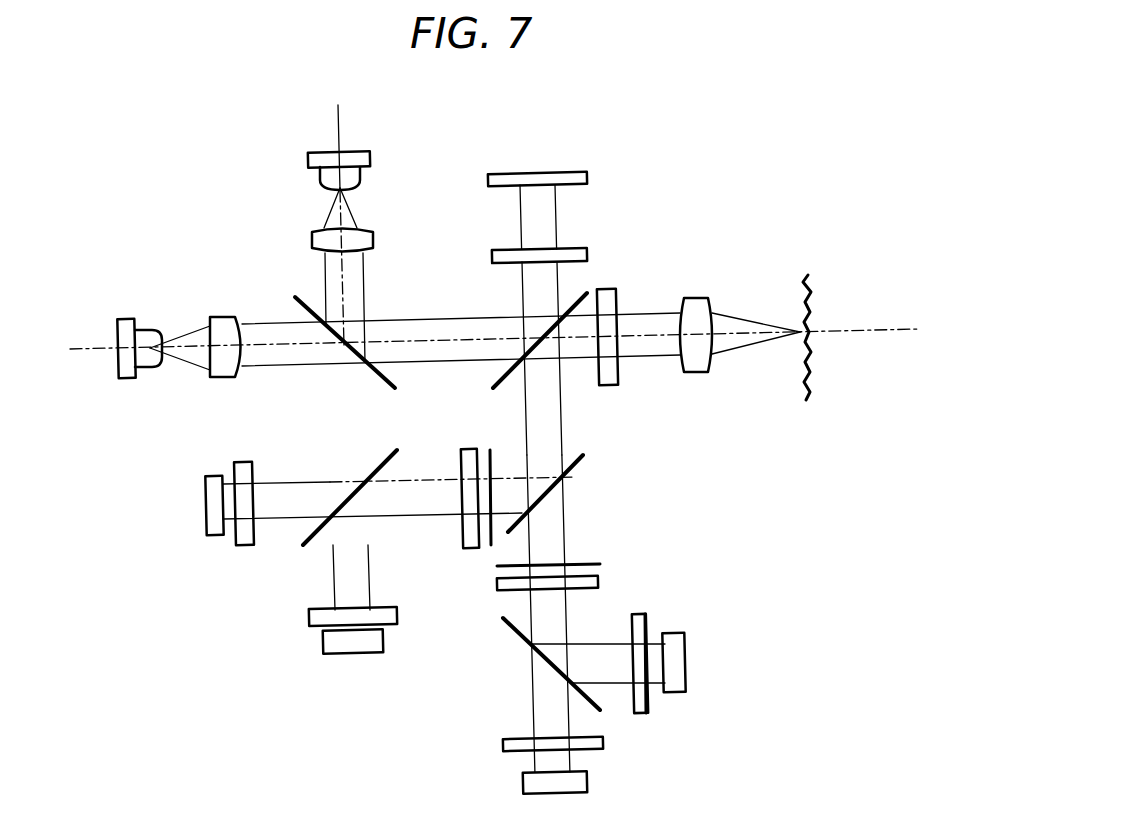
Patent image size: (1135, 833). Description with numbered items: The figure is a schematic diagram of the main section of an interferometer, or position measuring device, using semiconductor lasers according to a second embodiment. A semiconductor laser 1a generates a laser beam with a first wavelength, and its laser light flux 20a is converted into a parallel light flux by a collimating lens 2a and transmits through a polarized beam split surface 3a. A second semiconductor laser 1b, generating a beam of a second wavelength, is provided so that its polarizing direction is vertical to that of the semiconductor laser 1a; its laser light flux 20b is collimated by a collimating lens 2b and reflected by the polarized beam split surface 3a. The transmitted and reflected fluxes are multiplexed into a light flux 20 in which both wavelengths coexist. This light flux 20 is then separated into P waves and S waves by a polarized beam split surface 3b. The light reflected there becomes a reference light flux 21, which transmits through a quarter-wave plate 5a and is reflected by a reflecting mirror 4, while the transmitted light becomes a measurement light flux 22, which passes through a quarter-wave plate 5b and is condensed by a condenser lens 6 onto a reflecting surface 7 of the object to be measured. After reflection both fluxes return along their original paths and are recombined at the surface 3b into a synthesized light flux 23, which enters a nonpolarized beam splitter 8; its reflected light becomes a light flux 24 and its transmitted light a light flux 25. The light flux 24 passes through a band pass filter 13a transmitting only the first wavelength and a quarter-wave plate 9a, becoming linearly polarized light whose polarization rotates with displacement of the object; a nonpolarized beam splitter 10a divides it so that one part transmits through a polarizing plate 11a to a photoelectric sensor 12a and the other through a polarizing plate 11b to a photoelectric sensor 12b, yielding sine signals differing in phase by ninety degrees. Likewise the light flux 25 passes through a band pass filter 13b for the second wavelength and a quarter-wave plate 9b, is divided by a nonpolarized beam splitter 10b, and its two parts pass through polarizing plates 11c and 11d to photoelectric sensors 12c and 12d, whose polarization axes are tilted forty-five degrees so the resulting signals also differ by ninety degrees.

The semiconductor laser 1a is at (125, 318).
The semiconductor laser 1b is at (322, 158).
The collimating lens 2a is at (227, 316).
The collimating lens 2b is at (313, 238).
The polarized beam split surface 3a is at (378, 383).
The polarized beam split surface 3b is at (496, 383).
The reflecting mirror 4 is at (540, 175).
The ¼λ wavelength plate 5a is at (588, 253).
The ¼λ wavelength plate 5b is at (610, 373).
The condenser lens 6 is at (690, 297).
The reflecting surface 7 is at (808, 275).
The nonpolarized beam splitter 8 is at (585, 468).
The ¼λ plate 9a is at (465, 535).
The ¼λ plate 9b is at (599, 583).
The nonpolarized beam splitter 10a is at (348, 498).
The nonpolarized beam splitter 10b is at (505, 630).
The polarizing plate 11a is at (243, 462).
The polarizing plate 11b is at (310, 617).
The polarizing plate 11c is at (503, 743).
The polarizing plate 11d is at (647, 712).
The photoelectric sensor 12a is at (207, 507).
The photoelectric sensor 12b is at (345, 655).
The photoelectric sensor 12c is at (516, 781).
The photoelectric sensor 12d is at (686, 660).
The band pass filter 13a is at (488, 563).
The band pass filter 13b is at (590, 561).
The light flux 20 is at (452, 315).
The laser light flux 20a is at (185, 366).
The laser light flux 20b is at (352, 200).
The reference light flux 21 is at (548, 213).
The measurement light flux 22 is at (745, 355).
The synthesized light flux 23 is at (549, 426).
The light flux 24 is at (428, 497).
The light flux 25 is at (565, 524).